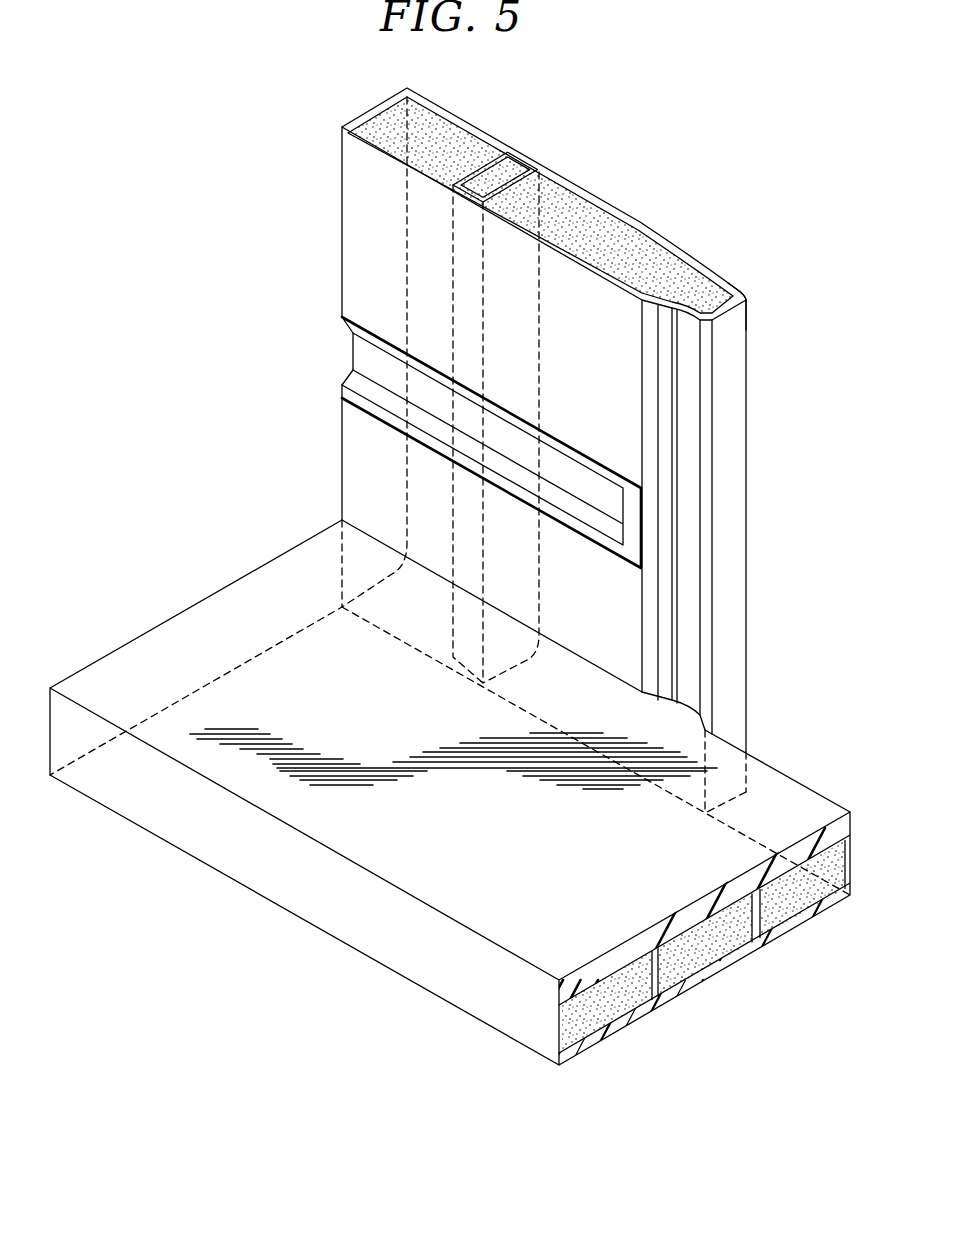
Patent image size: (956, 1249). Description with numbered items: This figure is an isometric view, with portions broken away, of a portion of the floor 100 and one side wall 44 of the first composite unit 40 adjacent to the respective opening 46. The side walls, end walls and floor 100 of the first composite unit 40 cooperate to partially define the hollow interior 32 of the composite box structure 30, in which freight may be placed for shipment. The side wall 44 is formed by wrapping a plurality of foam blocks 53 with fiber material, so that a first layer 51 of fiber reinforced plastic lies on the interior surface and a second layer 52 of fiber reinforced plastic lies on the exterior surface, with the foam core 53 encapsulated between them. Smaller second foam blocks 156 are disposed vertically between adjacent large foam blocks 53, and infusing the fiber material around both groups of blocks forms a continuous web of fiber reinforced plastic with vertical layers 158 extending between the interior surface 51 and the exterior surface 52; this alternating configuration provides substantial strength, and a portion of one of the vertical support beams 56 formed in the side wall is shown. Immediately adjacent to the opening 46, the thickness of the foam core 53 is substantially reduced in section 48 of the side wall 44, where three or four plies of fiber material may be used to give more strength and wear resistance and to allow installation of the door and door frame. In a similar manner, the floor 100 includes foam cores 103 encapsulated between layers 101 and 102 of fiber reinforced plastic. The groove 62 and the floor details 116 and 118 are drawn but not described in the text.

The composite box structure 30 is at (800, 350).
The hollow interior 32 is at (183, 301).
The first composite unit 40 is at (748, 433).
The side wall 44 is at (622, 190).
The opening 46 is at (815, 554).
The section of side wall 48 is at (735, 287).
The first layer of fiber reinforced plastic 51 is at (353, 228).
The second layer of fiber reinforced plastic 52 is at (447, 111).
The foam core 53 is at (378, 112).
The vertical support beam 56 is at (540, 300).
The groove 62 is at (357, 360).
The floor 100 is at (143, 828).
The layer of fiber reinforced plastic 101 is at (491, 816).
The layer of fiber reinforced plastic 102 is at (714, 972).
The foam cores 103 is at (797, 903).
The top layer 116 is at (628, 938).
The dividers 118 is at (760, 925).
The second foam blocks 156 is at (512, 167).
The vertical layers of fiber reinforced plastic 158 is at (483, 158).